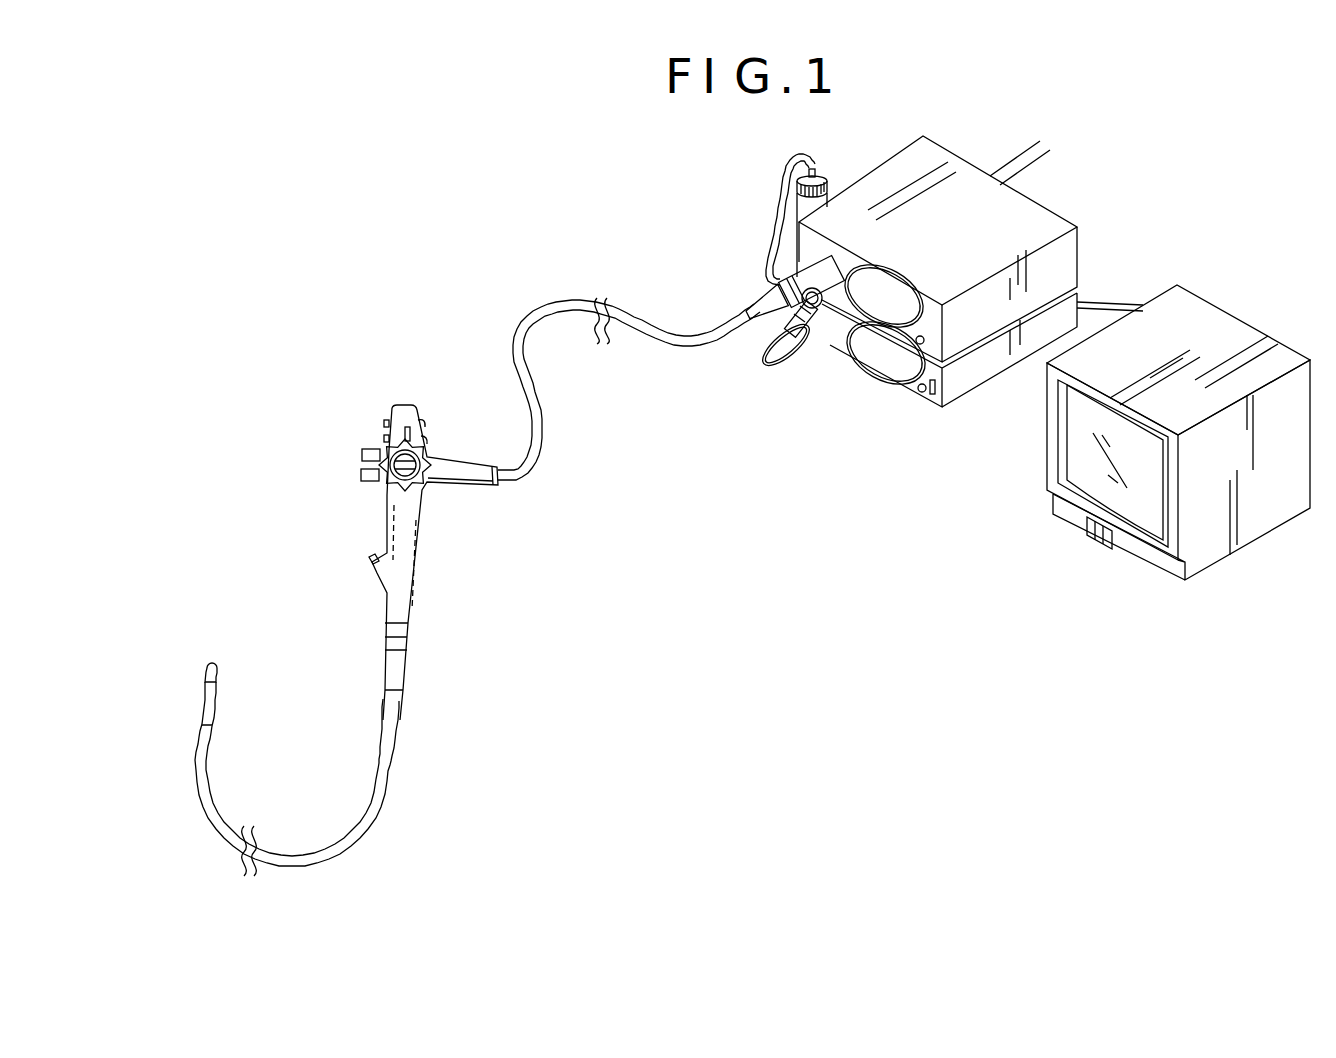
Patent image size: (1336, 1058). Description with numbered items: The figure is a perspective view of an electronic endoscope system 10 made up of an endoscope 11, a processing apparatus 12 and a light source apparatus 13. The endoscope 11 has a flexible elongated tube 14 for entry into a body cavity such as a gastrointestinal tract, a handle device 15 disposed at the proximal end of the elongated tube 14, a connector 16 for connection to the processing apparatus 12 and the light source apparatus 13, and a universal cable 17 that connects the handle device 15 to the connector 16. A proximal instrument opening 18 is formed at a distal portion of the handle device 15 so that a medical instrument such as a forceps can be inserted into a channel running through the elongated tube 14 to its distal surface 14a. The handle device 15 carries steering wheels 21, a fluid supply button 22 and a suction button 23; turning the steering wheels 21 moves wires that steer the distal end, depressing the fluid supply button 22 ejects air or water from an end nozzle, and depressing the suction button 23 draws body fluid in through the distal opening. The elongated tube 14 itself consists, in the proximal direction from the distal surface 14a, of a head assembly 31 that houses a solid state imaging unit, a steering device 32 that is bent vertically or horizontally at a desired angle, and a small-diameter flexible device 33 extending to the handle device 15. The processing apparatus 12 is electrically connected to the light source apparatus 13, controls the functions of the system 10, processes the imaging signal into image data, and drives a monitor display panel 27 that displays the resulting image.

The electronic endoscope system 10 is at (894, 696).
The endoscope 11 is at (500, 684).
The processing apparatus 12 is at (912, 387).
The light source apparatus 13 is at (997, 200).
The elongated tube 14 is at (405, 781).
The distal surface 14a is at (210, 662).
The handle device 15 is at (426, 580).
The connector 16 is at (760, 299).
The universal cable 17 is at (532, 394).
The proximal instrument opening 18 is at (372, 558).
The steering wheels 21 is at (383, 440).
The fluid supply button 22 is at (373, 452).
The suction button 23 is at (370, 473).
The monitor display panel 27 is at (1220, 330).
The head assembly 31 is at (207, 672).
The steering device 32 is at (213, 702).
The flexible device 33 is at (200, 737).